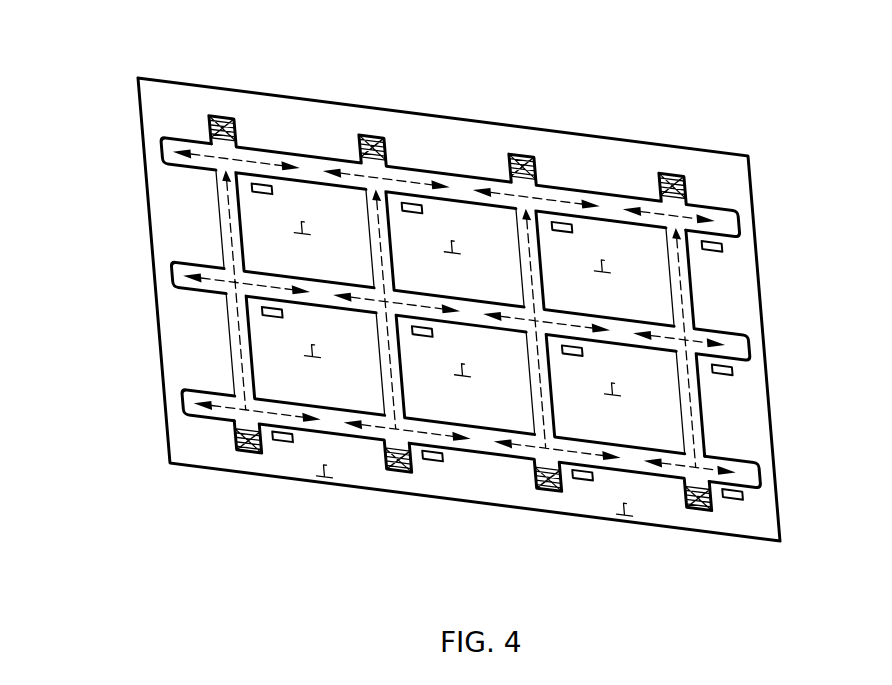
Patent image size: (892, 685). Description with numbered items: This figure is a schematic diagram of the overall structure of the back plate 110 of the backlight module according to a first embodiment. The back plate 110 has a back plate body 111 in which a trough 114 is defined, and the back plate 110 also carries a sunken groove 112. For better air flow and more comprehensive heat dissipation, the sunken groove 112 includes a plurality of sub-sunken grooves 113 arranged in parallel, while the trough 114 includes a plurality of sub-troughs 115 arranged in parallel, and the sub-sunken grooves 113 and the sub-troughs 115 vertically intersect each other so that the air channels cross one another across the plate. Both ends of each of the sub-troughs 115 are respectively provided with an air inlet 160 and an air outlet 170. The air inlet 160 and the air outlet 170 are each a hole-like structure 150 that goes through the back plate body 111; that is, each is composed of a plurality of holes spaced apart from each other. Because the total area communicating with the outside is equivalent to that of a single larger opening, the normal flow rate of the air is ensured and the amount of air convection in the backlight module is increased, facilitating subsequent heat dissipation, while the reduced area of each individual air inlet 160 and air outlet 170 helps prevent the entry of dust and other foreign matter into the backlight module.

The back plate 110 is at (232, 62).
The back plate body 111 is at (467, 146).
The sunken groove 112 is at (173, 288).
The sub-sunken grooves 113 is at (175, 287).
The trough 114 is at (763, 346).
The sub-troughs 115 is at (693, 403).
The hole-like structure 150 is at (475, 331).
The air inlet 160 is at (688, 512).
The air outlet 170 is at (675, 175).